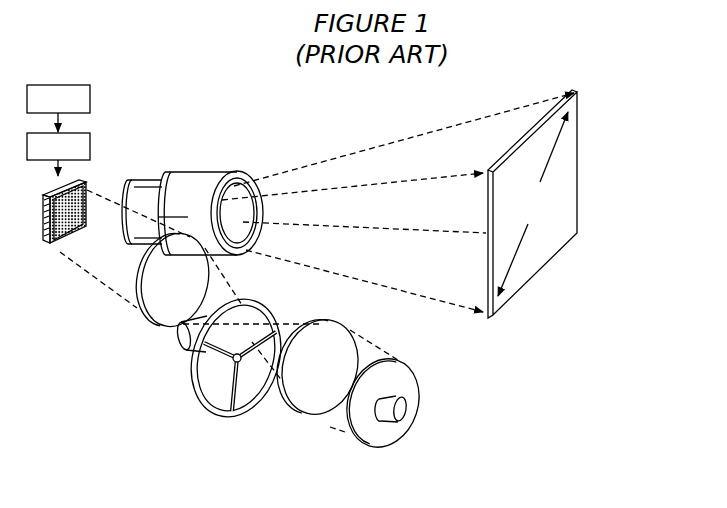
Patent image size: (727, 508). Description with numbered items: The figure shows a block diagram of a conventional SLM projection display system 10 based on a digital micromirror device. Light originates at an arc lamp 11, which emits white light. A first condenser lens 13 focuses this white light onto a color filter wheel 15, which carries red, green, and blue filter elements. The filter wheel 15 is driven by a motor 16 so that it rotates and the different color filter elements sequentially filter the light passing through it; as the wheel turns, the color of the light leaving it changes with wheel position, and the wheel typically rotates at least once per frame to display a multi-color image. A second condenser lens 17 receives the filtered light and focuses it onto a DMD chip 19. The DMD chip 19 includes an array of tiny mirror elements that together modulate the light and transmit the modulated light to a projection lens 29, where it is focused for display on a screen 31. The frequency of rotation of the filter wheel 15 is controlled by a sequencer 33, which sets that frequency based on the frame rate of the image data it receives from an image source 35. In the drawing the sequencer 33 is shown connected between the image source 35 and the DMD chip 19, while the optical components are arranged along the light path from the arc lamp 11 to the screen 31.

The SLM projection display system 10 is at (473, 373).
The arc lamp 11 is at (392, 430).
The first condenser lens 13 is at (325, 404).
The color filter wheel 15 is at (207, 408).
The motor 16 is at (190, 341).
The second condenser lens 17 is at (137, 298).
The DMD chip 19 is at (55, 246).
The projection lens 29 is at (179, 200).
The screen 31 is at (537, 267).
The sequencer 33 is at (90, 147).
The image source 35 is at (90, 97).